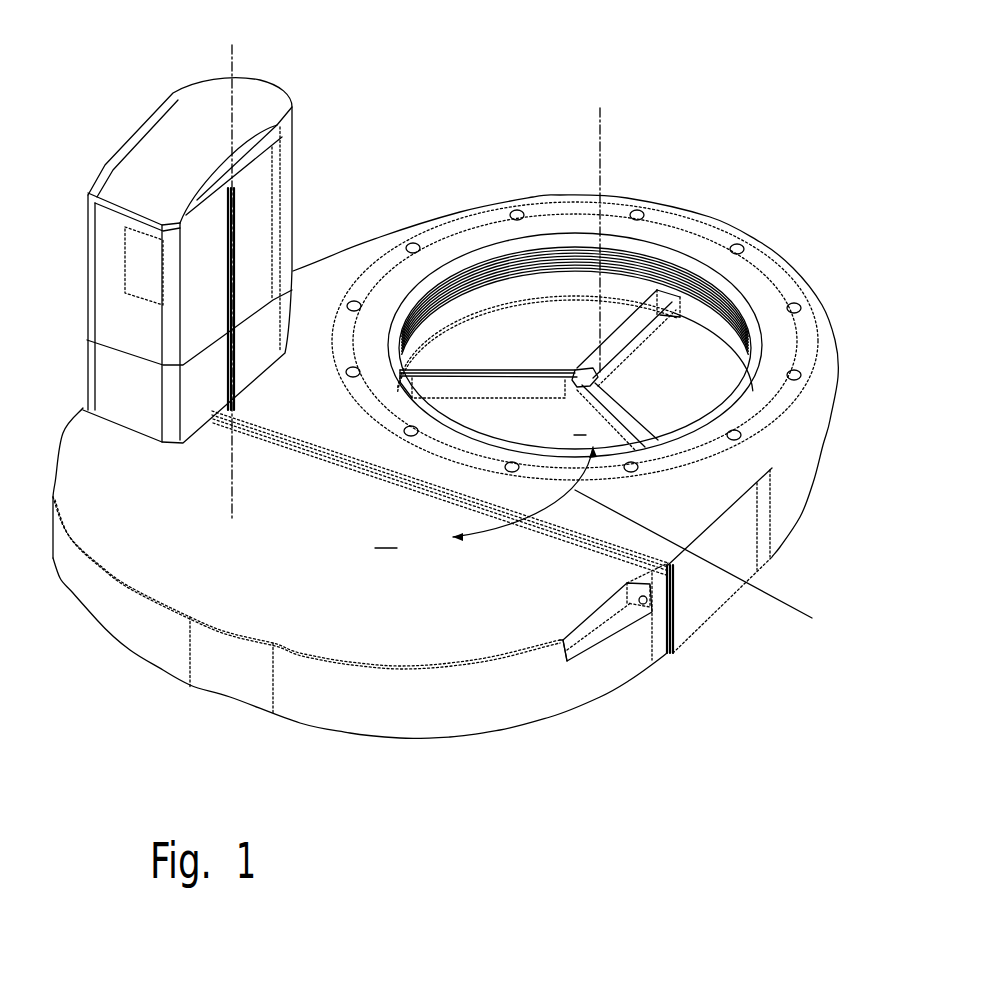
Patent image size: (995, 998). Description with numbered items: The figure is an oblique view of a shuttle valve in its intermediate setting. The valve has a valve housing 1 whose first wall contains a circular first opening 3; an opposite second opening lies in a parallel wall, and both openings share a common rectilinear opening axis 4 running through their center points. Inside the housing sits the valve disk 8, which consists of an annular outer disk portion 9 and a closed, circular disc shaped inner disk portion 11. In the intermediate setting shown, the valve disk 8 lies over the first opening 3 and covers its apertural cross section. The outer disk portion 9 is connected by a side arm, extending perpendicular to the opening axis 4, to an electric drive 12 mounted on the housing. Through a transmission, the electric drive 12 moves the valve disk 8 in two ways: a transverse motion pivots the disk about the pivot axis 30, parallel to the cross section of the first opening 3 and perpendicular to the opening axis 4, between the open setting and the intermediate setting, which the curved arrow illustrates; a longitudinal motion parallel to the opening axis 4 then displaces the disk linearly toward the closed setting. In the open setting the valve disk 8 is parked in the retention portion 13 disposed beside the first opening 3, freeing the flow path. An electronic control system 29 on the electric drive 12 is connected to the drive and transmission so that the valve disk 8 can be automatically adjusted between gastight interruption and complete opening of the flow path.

The valve housing 1 is at (392, 218).
The first opening 3 is at (707, 247).
The opening axis 4 is at (603, 130).
The valve disk 8 is at (700, 350).
The outer disk portion 9 is at (556, 335).
The inner disk portion 11 is at (560, 345).
The electric drive 12 is at (192, 143).
The retention portion 13 is at (317, 582).
The electronic control system 29 is at (147, 253).
The pivot axis 30 is at (232, 70).